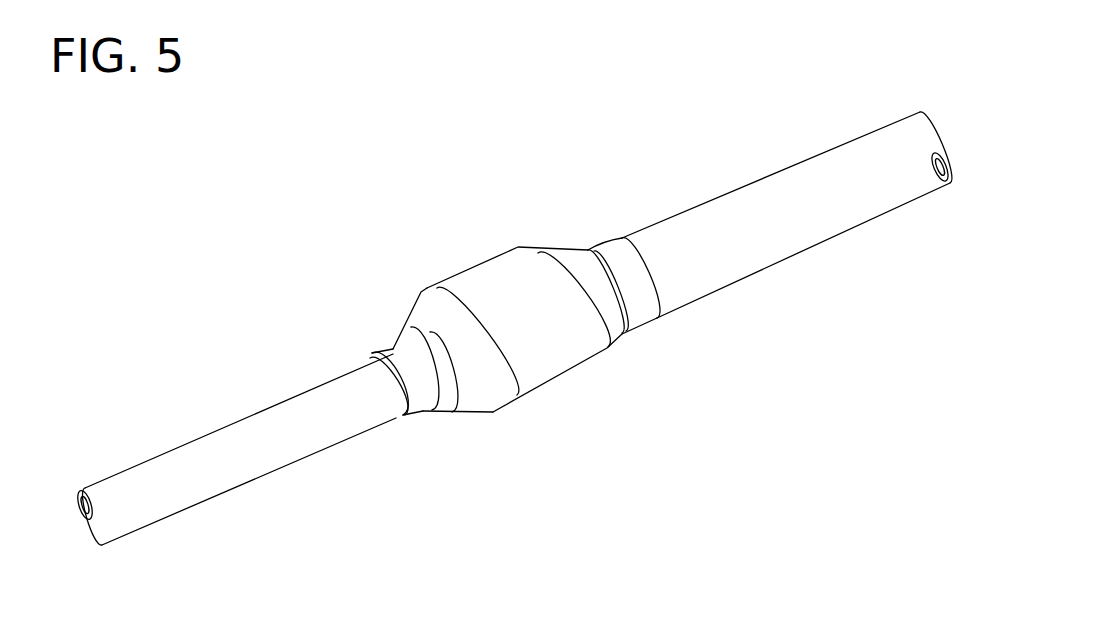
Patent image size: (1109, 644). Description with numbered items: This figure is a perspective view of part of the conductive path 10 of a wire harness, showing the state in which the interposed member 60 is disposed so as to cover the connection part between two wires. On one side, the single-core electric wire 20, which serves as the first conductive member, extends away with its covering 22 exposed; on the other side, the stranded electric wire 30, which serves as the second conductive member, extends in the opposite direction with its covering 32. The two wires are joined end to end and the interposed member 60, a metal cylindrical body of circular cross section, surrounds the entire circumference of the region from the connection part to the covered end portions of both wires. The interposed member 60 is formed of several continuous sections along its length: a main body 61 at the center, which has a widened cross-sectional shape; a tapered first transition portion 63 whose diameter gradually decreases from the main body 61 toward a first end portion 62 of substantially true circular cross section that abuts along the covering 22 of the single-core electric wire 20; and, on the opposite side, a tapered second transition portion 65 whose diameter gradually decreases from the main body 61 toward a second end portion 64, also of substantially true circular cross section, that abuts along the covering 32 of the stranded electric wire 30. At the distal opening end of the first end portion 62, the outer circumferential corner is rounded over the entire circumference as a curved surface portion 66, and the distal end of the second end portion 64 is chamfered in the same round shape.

The conductive path 10 is at (502, 138).
The single-core electric wire 20 is at (238, 418).
The covering 22 is at (253, 467).
The stranded electric wire 30 is at (785, 168).
The covering 32 is at (788, 243).
The interposed member 60 is at (552, 368).
The main body 61 is at (483, 270).
The first end portion 62 is at (393, 347).
The first transition portion 63 is at (422, 313).
The second end portion 64 is at (620, 255).
The second transition portion 65 is at (567, 253).
The curved surface portion 66 is at (403, 418).